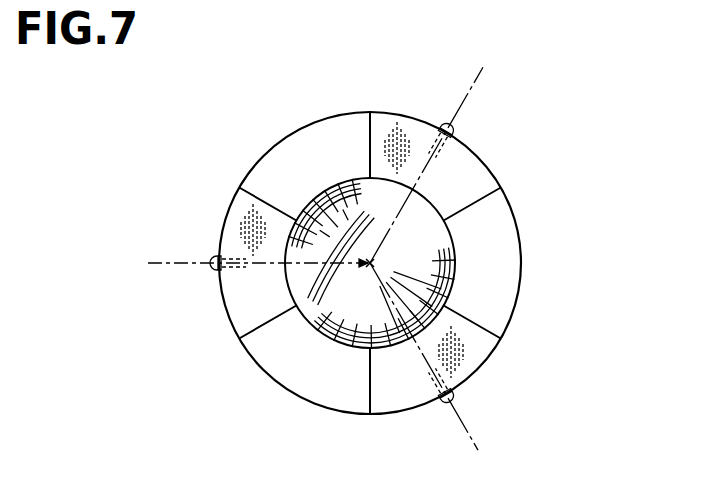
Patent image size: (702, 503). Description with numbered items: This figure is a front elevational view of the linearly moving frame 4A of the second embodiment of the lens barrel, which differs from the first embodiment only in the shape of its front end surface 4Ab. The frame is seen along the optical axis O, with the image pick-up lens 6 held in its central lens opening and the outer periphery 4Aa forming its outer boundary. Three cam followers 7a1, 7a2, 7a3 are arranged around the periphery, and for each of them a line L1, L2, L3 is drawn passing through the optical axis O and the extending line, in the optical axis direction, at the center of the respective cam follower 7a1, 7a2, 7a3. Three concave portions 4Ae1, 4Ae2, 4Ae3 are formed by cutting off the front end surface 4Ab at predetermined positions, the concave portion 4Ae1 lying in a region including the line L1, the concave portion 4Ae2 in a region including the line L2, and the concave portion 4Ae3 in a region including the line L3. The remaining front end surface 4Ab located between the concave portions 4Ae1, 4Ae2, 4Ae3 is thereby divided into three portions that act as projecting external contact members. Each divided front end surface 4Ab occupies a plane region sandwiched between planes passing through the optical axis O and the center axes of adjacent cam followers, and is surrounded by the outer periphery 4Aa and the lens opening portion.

The linearly moving frame 4A is at (247, 175).
The outer periphery 4Aa is at (403, 117).
The front end surface 4Ab is at (313, 153).
The concave portion 4Ae1 is at (464, 178).
The concave portion 4Ae2 is at (395, 388).
The concave portion 4Ae3 is at (236, 301).
The image pick-up lens 6 is at (407, 275).
The optical axis O is at (370, 263).
The line L1 is at (470, 100).
The line L2 is at (472, 440).
The line L3 is at (174, 259).
The cam follower 7a1 is at (455, 130).
The cam follower 7a2 is at (452, 401).
The cam follower 7a3 is at (212, 268).